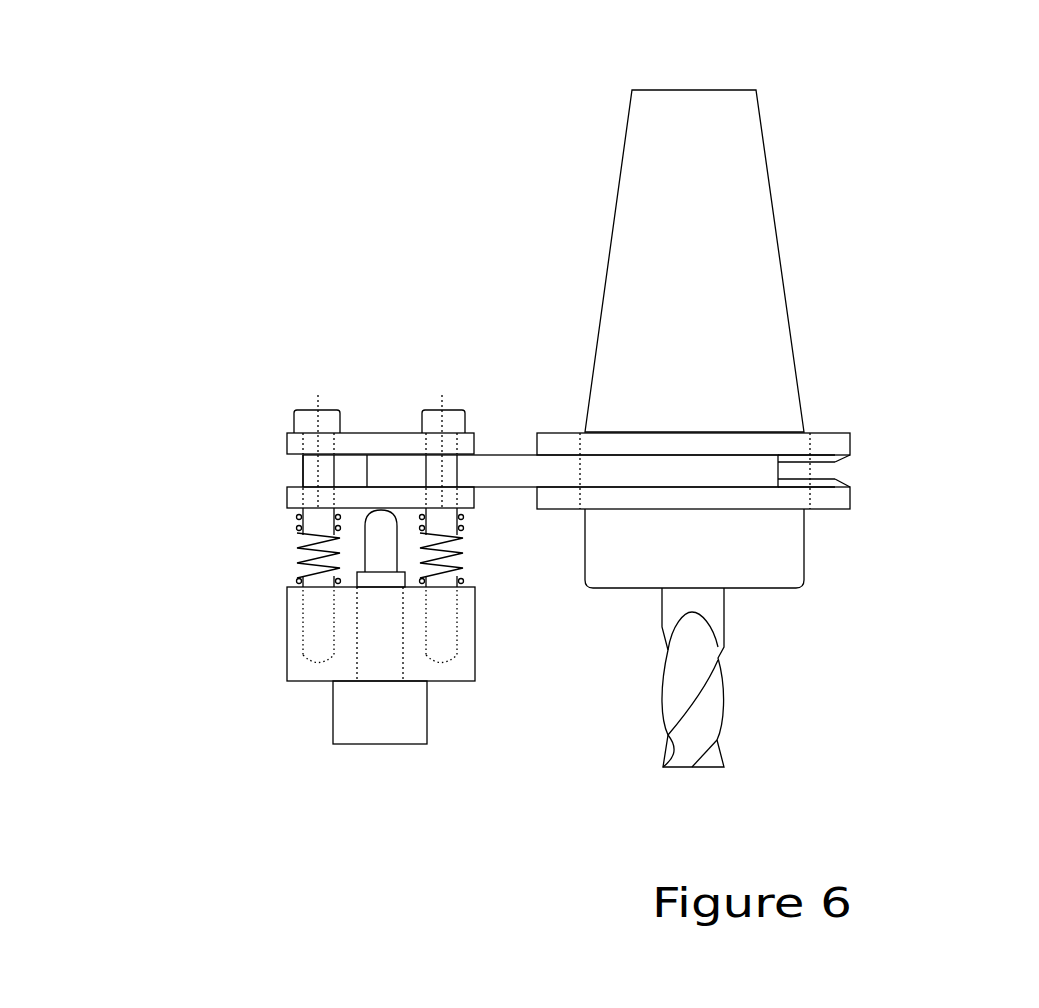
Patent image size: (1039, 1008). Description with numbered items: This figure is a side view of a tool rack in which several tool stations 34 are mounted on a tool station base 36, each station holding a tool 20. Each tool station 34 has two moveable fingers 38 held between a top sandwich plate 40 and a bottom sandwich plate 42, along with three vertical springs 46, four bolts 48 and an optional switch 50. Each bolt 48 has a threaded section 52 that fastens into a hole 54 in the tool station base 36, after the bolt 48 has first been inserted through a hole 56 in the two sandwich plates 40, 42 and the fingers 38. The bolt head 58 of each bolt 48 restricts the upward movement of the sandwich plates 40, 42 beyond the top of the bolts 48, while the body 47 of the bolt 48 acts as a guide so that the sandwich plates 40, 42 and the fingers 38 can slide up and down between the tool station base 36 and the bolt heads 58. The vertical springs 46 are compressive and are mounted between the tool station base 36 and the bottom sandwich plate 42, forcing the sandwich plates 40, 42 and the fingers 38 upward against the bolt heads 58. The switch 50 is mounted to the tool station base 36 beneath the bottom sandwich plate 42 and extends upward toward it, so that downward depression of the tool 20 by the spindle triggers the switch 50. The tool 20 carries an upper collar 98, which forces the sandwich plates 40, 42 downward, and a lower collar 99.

The tool 20 is at (725, 257).
The tool station 34 is at (385, 195).
The tool station base 36 is at (298, 670).
The moveable finger 38 is at (502, 467).
The top sandwich plate 40 is at (288, 438).
The bottom sandwich plate 42 is at (288, 502).
The vertical spring 46 is at (302, 562).
The body of the bolt 47 is at (448, 520).
The bolt 48 is at (300, 470).
The switch 50 is at (378, 548).
The threaded section 52 is at (317, 632).
The hole 54 is at (303, 625).
The hole 56 is at (335, 447).
The bolt head 58 is at (313, 417).
The upper collar 98 is at (849, 449).
The lower collar 99 is at (849, 503).